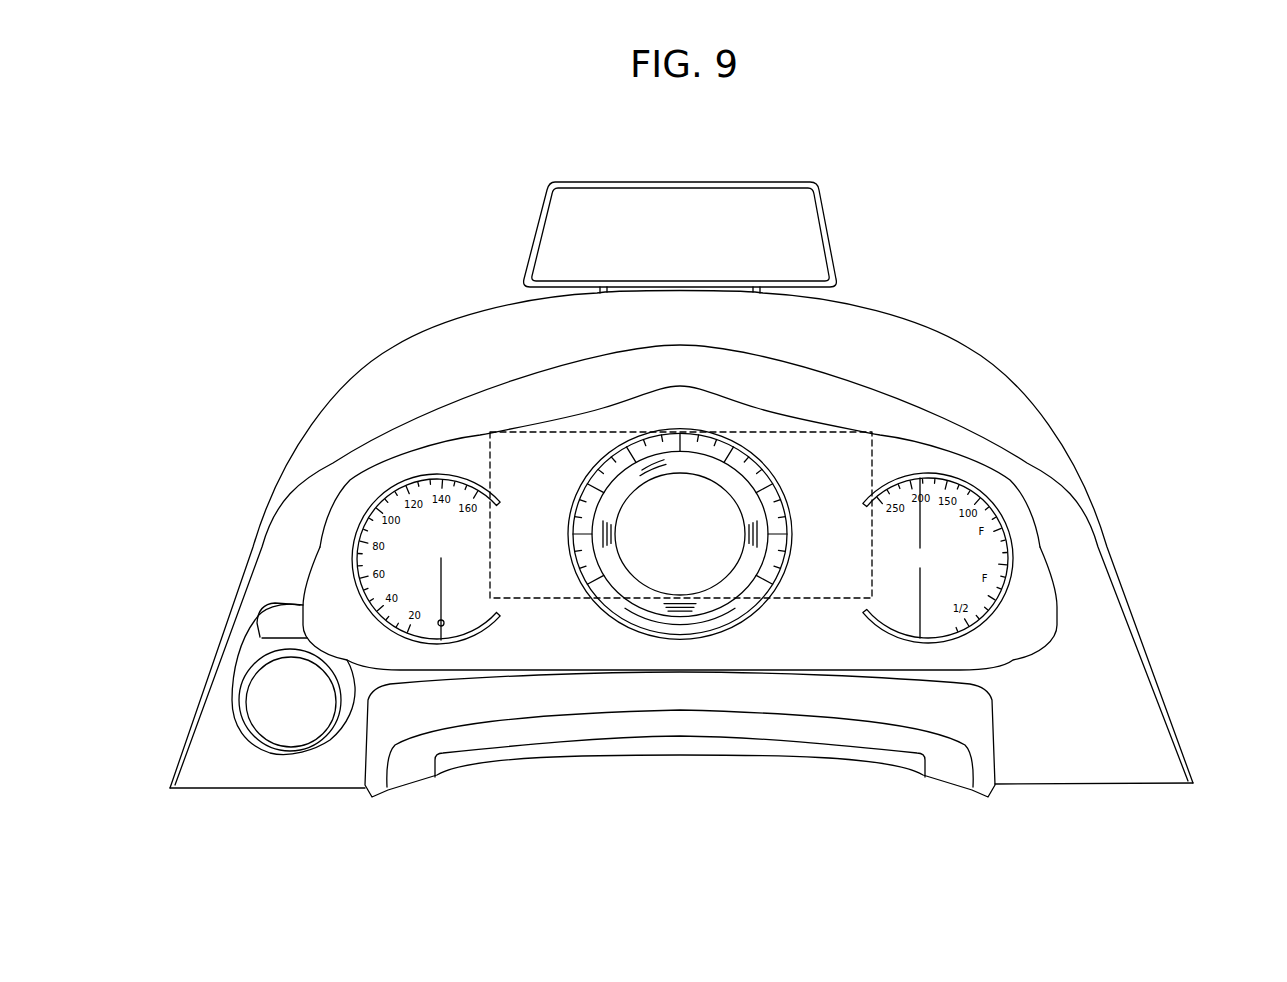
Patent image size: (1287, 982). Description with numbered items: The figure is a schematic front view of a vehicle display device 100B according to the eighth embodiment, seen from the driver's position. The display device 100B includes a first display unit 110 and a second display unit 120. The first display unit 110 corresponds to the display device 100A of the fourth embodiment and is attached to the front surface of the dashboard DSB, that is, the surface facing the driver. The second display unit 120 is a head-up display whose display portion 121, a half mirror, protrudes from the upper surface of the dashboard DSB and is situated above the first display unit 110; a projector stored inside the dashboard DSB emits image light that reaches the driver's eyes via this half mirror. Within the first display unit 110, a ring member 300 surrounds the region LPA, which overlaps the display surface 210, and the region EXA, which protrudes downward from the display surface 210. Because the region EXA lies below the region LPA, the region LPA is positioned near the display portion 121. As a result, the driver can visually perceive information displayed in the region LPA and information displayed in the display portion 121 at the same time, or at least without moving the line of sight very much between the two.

The display device 100B is at (781, 396).
The display device 100A is at (1028, 527).
The first display unit 110 is at (743, 473).
The second display unit 120 is at (813, 207).
The display portion 121 is at (708, 181).
The display surface 210 is at (828, 598).
The ring member 300 is at (687, 629).
The region LPA is at (670, 537).
The region EXA is at (677, 622).
The dashboard DSB is at (1107, 537).